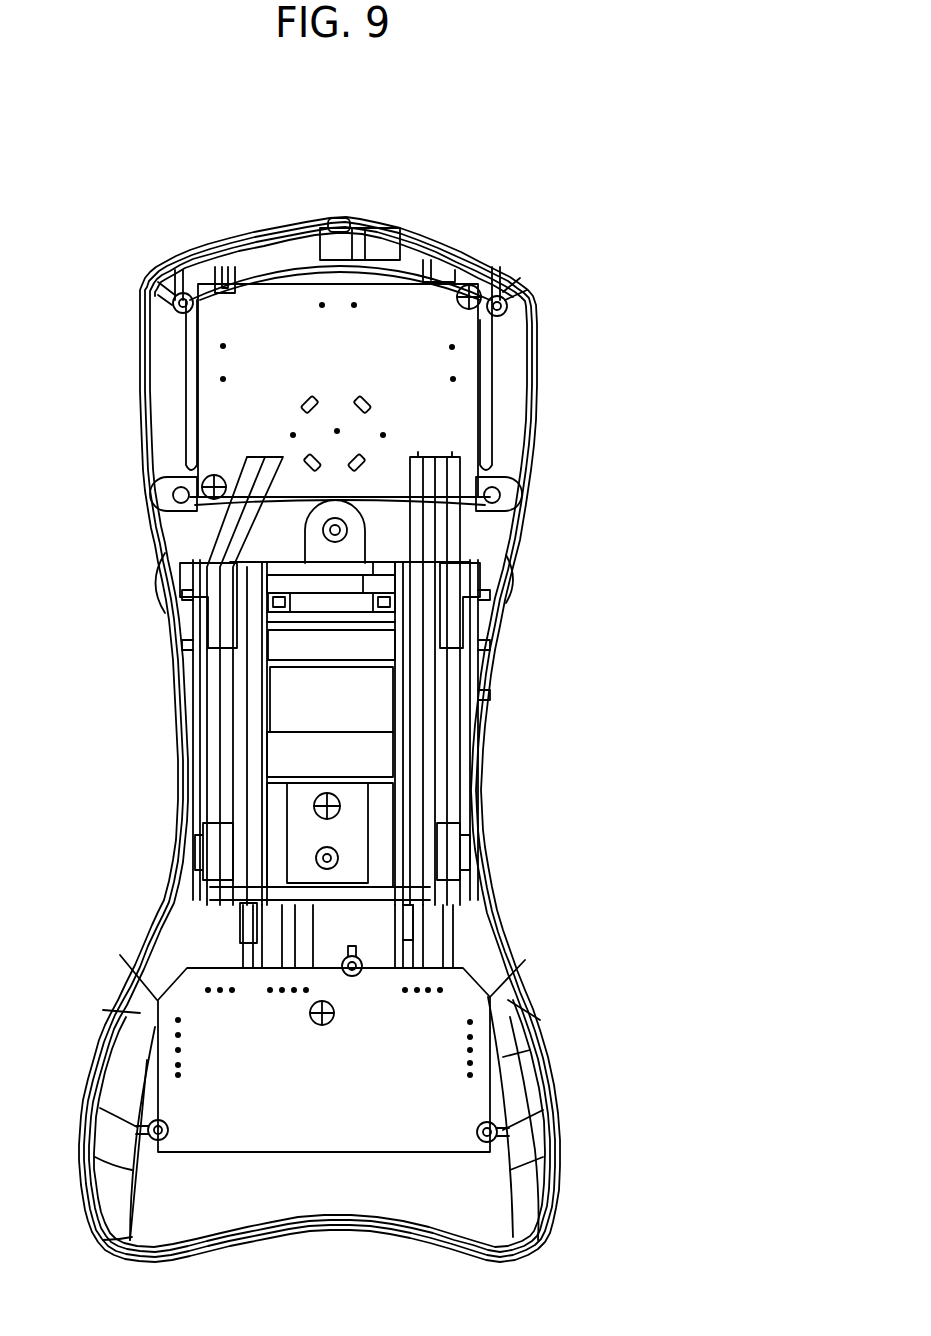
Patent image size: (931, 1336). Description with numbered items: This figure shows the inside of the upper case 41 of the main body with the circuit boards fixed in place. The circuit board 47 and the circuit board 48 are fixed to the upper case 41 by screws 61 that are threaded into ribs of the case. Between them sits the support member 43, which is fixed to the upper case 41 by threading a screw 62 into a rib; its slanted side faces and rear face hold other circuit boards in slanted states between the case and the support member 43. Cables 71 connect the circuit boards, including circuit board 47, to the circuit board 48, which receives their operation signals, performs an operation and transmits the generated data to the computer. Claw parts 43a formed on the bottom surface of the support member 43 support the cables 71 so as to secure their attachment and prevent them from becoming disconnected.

The upper case 41 is at (567, 1162).
The support member 43 is at (490, 637).
The claw parts 43a is at (450, 620).
The circuit board 47 is at (453, 433).
The circuit board 48 is at (467, 1097).
The screws 61 is at (477, 285).
The screw 62 is at (340, 803).
The cables 71 is at (418, 735).